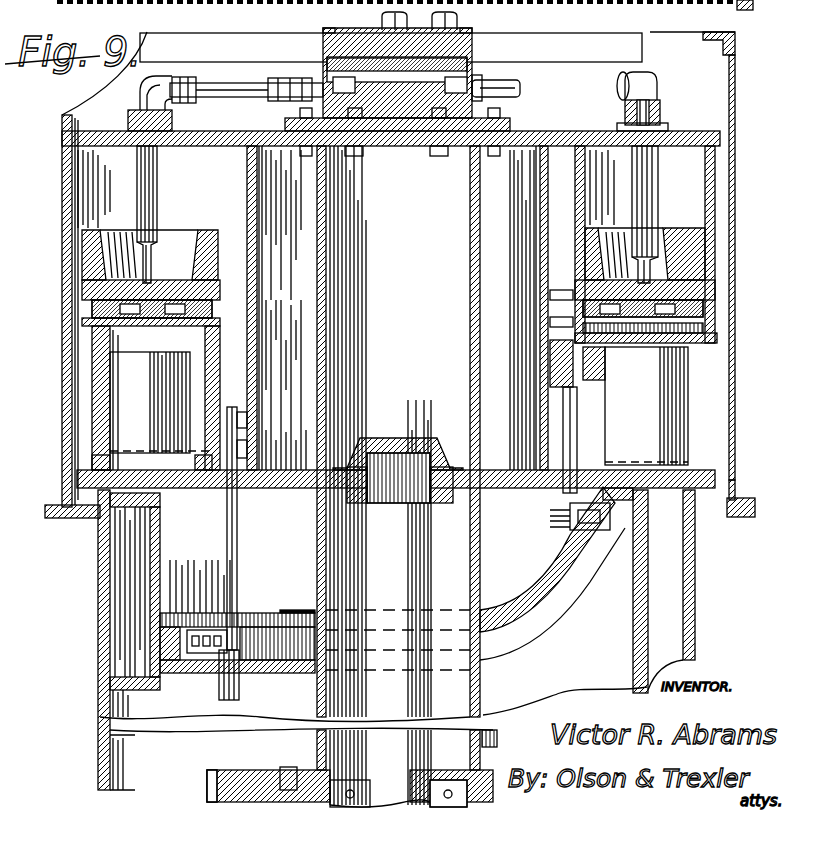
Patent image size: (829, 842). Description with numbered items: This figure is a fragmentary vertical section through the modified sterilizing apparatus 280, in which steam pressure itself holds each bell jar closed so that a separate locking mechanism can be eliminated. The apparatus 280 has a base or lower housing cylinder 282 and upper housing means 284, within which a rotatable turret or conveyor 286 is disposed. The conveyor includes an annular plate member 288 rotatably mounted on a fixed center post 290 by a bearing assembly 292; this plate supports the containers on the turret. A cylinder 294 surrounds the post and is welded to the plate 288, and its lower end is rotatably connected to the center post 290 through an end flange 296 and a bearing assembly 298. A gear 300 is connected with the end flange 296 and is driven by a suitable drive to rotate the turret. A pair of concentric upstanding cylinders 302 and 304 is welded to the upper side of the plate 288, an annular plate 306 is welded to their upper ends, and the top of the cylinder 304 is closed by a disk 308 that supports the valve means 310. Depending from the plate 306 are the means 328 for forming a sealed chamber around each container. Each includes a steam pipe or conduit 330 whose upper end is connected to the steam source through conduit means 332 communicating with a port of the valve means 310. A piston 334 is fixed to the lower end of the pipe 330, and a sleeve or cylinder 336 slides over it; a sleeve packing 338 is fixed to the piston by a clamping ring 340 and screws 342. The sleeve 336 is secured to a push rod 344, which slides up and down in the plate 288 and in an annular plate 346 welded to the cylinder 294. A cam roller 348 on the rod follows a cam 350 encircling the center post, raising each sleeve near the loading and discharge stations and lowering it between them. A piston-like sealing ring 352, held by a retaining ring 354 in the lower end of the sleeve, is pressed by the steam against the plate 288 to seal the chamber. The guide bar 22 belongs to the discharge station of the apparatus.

The piston 22 is at (188, 378).
The apparatus 280 is at (732, 8).
The base or lower housing cylinder 282 is at (698, 583).
The upper housing means 284 is at (770, 174).
The rotatable turret or conveyor 286 is at (521, 116).
The annular plate member 288 is at (275, 446).
The fixed center post 290 is at (433, 566).
The bearing assembly 292 is at (447, 467).
The cylinder 294 is at (483, 694).
The end flange 296 is at (320, 750).
The bearing assembly 298 is at (441, 777).
The gear 300 is at (207, 789).
The upstanding cylinder 302 is at (252, 224).
The upstanding cylinder 304 is at (320, 189).
The annular plate 306 is at (548, 128).
The disk 308 is at (405, 132).
The valve means 310 is at (484, 73).
The means for forming bell jars or sealed chambers 328 is at (76, 298).
The steam pipe or conduit 330 is at (158, 173).
The conduit means 332 is at (223, 79).
The piston 334 is at (195, 272).
The sleeve or cylinder 336 is at (242, 350).
The sleeve packing 338 is at (245, 300).
The clamping ring 340 is at (118, 319).
The screws 342 is at (110, 346).
The push rod 344 is at (224, 524).
The annular plate 346 is at (308, 678).
The cam roller 348 is at (167, 641).
The cam 350 is at (170, 603).
The piston-like sealing ring 352 is at (78, 470).
The retaining ring 354 is at (97, 436).